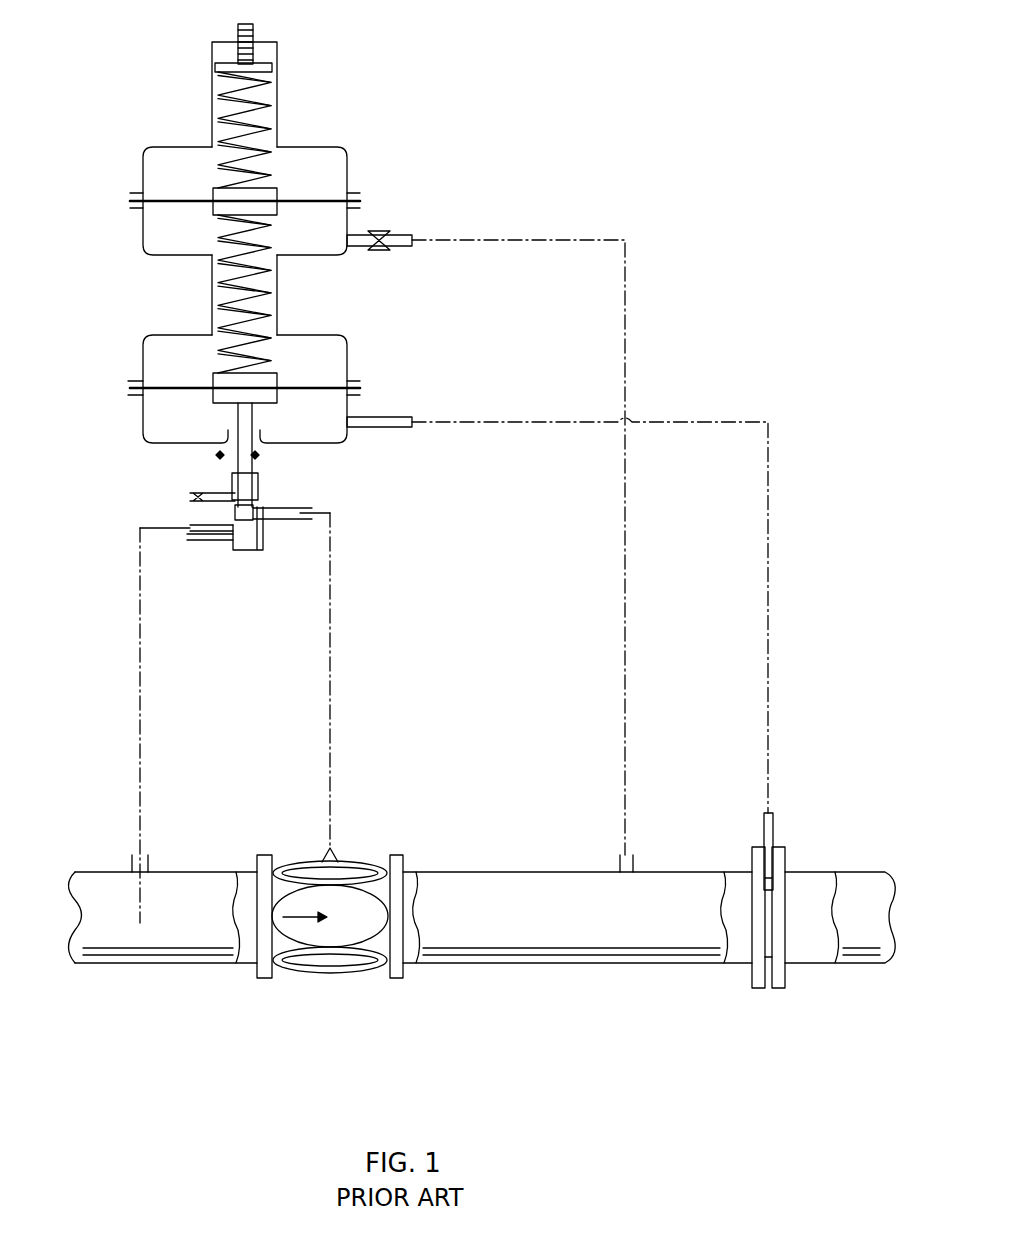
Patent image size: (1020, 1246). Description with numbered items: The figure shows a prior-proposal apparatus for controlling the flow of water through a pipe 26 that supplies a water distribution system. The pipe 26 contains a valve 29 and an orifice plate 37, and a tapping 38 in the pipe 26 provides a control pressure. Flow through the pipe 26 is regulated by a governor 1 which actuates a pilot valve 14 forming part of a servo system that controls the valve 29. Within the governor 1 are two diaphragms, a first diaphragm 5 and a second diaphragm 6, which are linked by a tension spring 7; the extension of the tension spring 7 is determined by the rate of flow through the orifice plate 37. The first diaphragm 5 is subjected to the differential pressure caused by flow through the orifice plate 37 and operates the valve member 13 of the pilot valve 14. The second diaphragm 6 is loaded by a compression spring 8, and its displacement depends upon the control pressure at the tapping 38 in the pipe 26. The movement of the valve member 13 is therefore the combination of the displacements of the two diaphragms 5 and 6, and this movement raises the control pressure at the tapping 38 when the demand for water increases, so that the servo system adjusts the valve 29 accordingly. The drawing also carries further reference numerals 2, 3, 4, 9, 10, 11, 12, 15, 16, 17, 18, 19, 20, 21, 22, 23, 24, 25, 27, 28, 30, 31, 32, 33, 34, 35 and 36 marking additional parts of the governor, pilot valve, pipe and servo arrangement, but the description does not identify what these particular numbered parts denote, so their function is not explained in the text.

The governor 1 is at (135, 334).
The upper diaphragm 2 is at (352, 236).
The upper housing 3 is at (347, 155).
The lower pressure connection 4 is at (333, 436).
The first diaphragm 5 is at (295, 385).
The second diaphragm 6 is at (298, 200).
The tension spring 7 is at (212, 315).
The compression spring 8 is at (212, 110).
The spring housing 9 is at (278, 95).
The adjusting screw 10 is at (238, 42).
The stem guide 11 is at (260, 477).
The seal 12 is at (214, 456).
The valve member 13 is at (283, 501).
The pilot valve 14 is at (250, 552).
The upper chamber 15 is at (333, 176).
The intermediate chamber 16 is at (322, 352).
The upstream pressure line 17 is at (500, 240).
The throttle valve 18 is at (393, 230).
The lower chamber 19 is at (348, 390).
The downstream pressure line 20 is at (498, 420).
The pivot 21 is at (256, 496).
The nozzle 22 is at (238, 548).
The valve plate 23 is at (212, 533).
The bracket 24 is at (285, 521).
The counter lever 25 is at (190, 498).
The pipe 26 is at (510, 965).
The upstream pipe 27 is at (100, 940).
The downstream pipe 28 is at (845, 945).
The valve 29 is at (300, 983).
The flange 30 is at (345, 975).
The flow direction 31 is at (375, 932).
The flange 32 is at (368, 856).
The pressure tap 33 is at (336, 850).
The upstream pressure tap 34 is at (132, 862).
The pressure line 35 is at (142, 685).
The pressure line 36 is at (332, 700).
The orifice plate 37 is at (778, 850).
The tapping 38 is at (634, 860).